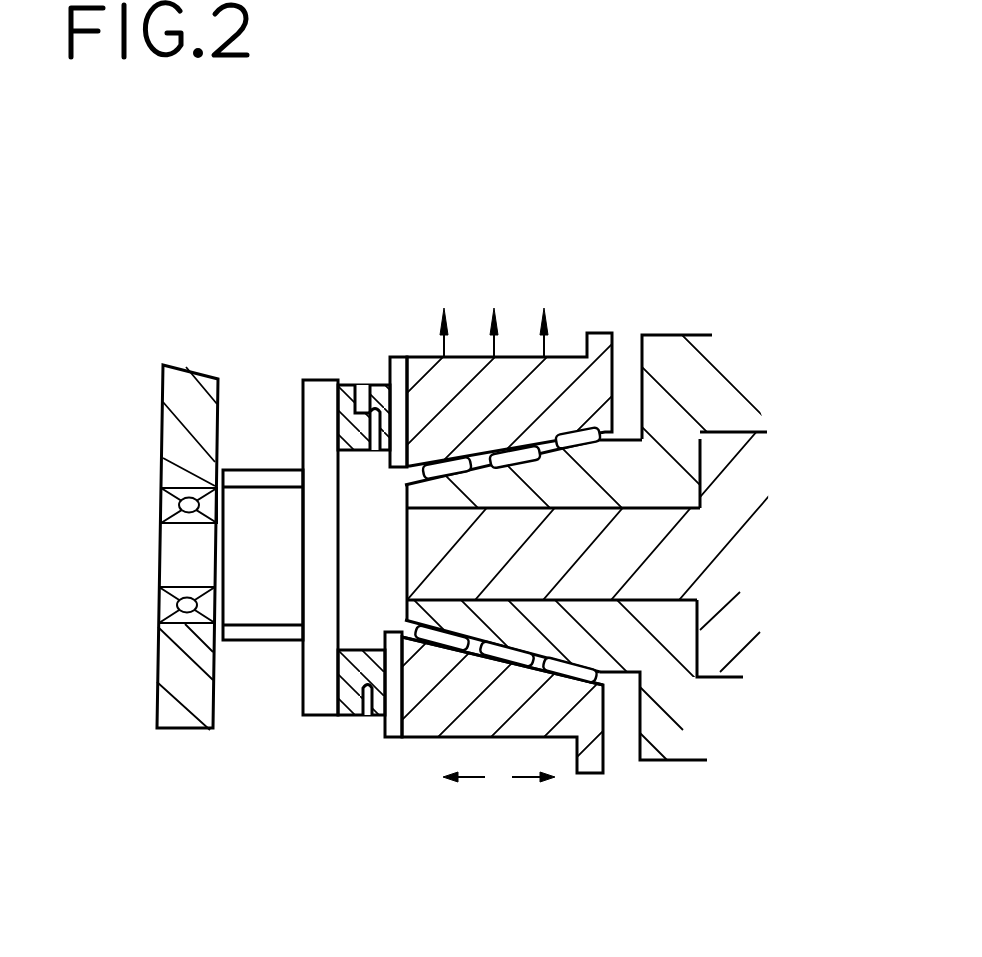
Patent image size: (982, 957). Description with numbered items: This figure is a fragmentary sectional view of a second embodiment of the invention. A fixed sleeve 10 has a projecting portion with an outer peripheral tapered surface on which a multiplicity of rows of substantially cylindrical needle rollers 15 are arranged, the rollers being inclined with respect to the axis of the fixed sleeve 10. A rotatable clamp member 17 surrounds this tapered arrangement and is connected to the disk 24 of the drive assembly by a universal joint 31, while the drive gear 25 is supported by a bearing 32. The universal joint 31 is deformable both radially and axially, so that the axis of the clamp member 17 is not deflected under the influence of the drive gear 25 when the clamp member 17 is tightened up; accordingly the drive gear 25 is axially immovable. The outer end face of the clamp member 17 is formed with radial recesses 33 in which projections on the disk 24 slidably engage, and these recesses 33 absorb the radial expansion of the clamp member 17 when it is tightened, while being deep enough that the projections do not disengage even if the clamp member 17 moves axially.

The fixed sleeve 10 is at (677, 399).
The needle rollers 15 is at (586, 446).
The rotatable clamp member 17 is at (558, 357).
The disk 24 is at (313, 702).
The drive gear 25 is at (265, 468).
The universal joint 31 is at (377, 382).
The bearing 32 is at (160, 502).
The radial recesses 33 is at (393, 737).